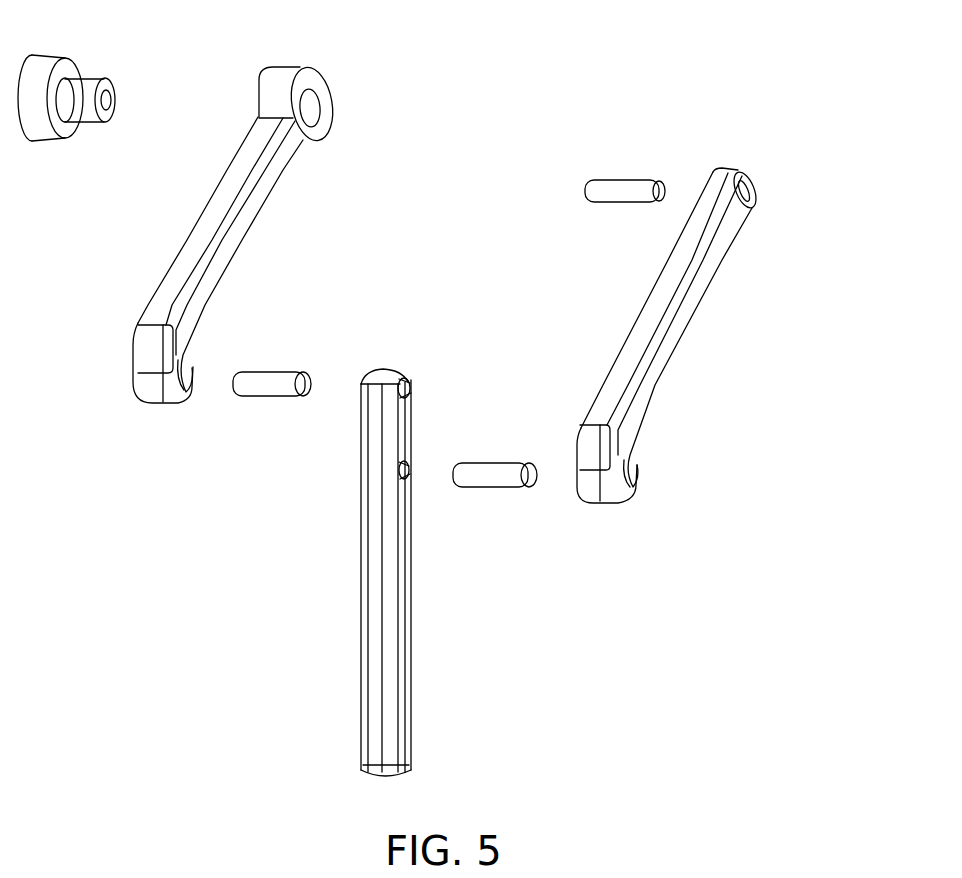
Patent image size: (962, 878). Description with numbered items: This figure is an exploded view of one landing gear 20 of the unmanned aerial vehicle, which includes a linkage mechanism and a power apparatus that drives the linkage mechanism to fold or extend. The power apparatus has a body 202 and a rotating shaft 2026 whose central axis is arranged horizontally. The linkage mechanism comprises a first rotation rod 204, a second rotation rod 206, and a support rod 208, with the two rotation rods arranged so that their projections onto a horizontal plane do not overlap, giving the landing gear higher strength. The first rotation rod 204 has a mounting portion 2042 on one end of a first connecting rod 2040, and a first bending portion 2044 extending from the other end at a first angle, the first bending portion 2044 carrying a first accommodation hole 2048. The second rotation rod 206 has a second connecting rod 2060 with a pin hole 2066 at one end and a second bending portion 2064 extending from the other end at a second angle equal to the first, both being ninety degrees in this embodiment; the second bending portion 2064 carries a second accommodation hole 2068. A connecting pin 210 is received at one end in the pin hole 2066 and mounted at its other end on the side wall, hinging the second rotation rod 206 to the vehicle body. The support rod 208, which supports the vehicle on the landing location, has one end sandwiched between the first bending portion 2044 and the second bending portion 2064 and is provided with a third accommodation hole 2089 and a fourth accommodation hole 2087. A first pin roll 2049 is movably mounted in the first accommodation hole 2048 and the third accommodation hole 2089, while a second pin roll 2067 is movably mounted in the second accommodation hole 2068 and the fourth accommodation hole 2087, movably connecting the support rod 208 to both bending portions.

The landing gear 20 is at (580, 135).
The body 202 is at (127, 79).
The rotating shaft 2026 is at (107, 100).
The first rotation rod 204 is at (296, 233).
The mounting portion 2042 is at (312, 138).
The first connecting rod 2040 is at (243, 240).
The first bending portion 2044 is at (200, 315).
The first accommodation hole 2048 is at (187, 365).
The first pin roll 2049 is at (315, 361).
The support rod 208 is at (435, 566).
The third accommodation hole 2089 is at (402, 390).
The fourth accommodation hole 2087 is at (399, 472).
The connecting pin 210 is at (650, 185).
The second rotation rod 206 is at (673, 350).
The pin hole 2066 is at (748, 197).
The second connecting rod 2060 is at (658, 372).
The second bending portion 2064 is at (628, 457).
The second accommodation hole 2068 is at (638, 465).
The second pin roll 2067 is at (640, 498).